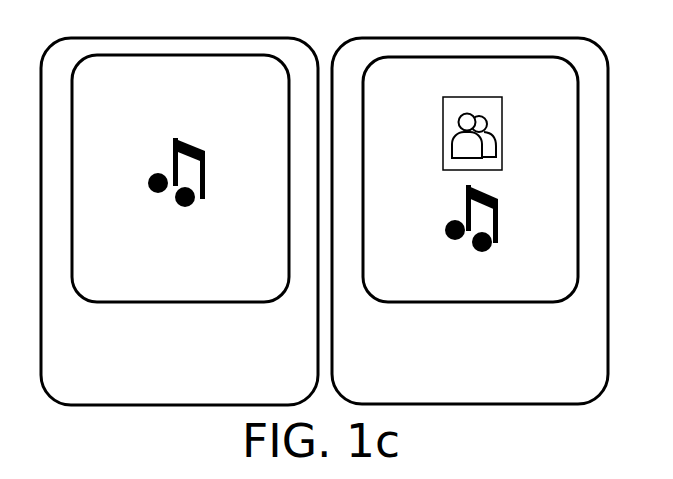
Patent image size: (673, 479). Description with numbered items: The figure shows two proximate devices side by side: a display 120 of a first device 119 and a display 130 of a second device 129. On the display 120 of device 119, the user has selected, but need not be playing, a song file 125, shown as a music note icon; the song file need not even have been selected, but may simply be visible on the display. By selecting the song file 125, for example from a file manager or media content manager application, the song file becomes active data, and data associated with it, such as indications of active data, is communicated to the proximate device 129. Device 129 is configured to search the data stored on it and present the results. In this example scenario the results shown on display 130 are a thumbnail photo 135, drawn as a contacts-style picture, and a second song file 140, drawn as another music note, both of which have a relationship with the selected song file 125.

The device 119 is at (152, 38).
The display 120 is at (222, 55).
The song file 125 is at (152, 161).
The device 129 is at (418, 38).
The display 130 is at (500, 57).
The thumbnail photo 135 is at (519, 122).
The second song file 140 is at (519, 215).